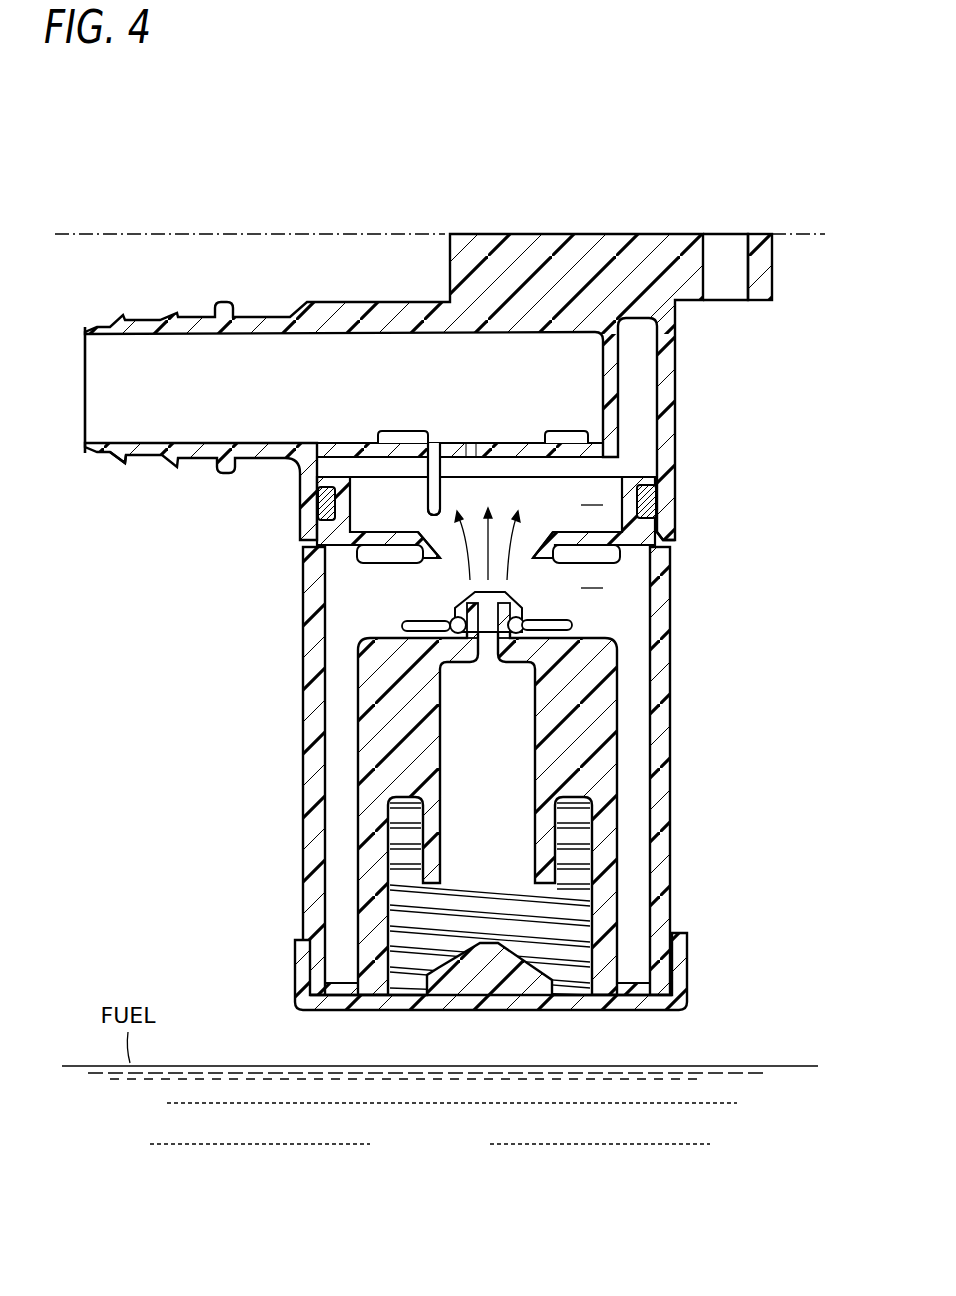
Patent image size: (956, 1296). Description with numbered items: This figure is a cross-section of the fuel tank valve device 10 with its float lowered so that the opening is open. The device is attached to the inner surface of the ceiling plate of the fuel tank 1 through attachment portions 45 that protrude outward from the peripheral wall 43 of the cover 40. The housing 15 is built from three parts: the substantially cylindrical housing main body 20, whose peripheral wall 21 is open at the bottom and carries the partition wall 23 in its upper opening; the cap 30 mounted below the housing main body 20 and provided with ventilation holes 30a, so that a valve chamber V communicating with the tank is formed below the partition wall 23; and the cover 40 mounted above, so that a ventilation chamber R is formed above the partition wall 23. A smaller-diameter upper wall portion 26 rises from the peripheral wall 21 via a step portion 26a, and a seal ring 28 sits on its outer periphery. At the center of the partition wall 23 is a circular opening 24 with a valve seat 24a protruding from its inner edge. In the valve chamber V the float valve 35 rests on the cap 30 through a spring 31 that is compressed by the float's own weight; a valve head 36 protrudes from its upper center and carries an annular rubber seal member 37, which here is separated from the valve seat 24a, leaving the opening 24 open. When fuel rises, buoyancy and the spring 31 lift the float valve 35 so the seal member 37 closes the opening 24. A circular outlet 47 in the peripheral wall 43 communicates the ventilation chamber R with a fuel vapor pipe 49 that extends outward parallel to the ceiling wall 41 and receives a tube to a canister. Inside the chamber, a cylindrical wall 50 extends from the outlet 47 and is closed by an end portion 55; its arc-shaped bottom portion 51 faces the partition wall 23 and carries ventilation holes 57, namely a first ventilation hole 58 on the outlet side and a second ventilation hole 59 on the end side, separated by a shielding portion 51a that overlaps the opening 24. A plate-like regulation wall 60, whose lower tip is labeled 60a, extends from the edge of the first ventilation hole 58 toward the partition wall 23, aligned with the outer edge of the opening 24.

The fuel tank 1 is at (240, 232).
The fuel tank valve device 10 is at (518, 226).
The housing 15 is at (173, 612).
The housing main body 20 is at (290, 700).
The peripheral wall 21 is at (663, 751).
The partition wall 23 is at (378, 543).
The opening 24 is at (523, 533).
The valve seat 24a is at (427, 557).
The upper wall portion 26 is at (630, 517).
The step portion 26a is at (661, 541).
The seal ring 28 is at (651, 500).
The cap 30 is at (293, 992).
The ventilation holes 30a is at (637, 1003).
The spring 31 is at (595, 896).
The float valve 35 is at (603, 655).
The valve head 36 is at (502, 603).
The seal member 37 is at (573, 627).
The cover 40 is at (457, 361).
The ceiling wall 41 is at (412, 318).
The peripheral wall 43 is at (668, 383).
The attachment portions 45 is at (763, 288).
The outlet 47 is at (297, 345).
The fuel vapor pipe 49 is at (147, 452).
The cylindrical wall 50 is at (626, 437).
The bottom portion 51 is at (363, 447).
The shielding portion 51a is at (472, 458).
The end portion 55 is at (613, 373).
The ventilation holes 57 is at (553, 388).
The first ventilation hole 58 is at (410, 440).
The second ventilation hole 59 is at (556, 440).
The regulation wall 60 is at (440, 489).
The tip of projection pin 60a is at (430, 516).